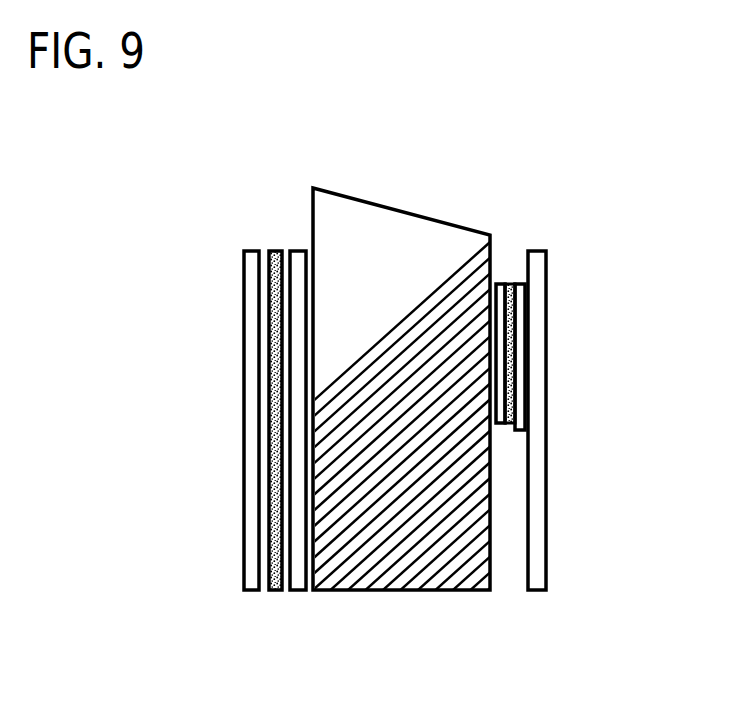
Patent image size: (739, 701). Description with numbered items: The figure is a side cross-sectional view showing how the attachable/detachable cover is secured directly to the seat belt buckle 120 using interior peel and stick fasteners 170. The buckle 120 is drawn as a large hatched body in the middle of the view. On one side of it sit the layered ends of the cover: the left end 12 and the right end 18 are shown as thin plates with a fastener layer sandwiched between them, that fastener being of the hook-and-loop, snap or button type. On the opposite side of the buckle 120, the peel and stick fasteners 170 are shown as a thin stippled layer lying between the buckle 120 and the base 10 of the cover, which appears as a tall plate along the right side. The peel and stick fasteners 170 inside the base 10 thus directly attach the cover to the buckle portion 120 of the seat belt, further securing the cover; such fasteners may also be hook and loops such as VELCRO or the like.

The base of cover 10 is at (537, 440).
The left end 12 is at (252, 282).
The right end 18 is at (300, 272).
The buckle 120 is at (414, 250).
The peel and stick fastener(s) 170 is at (512, 297).